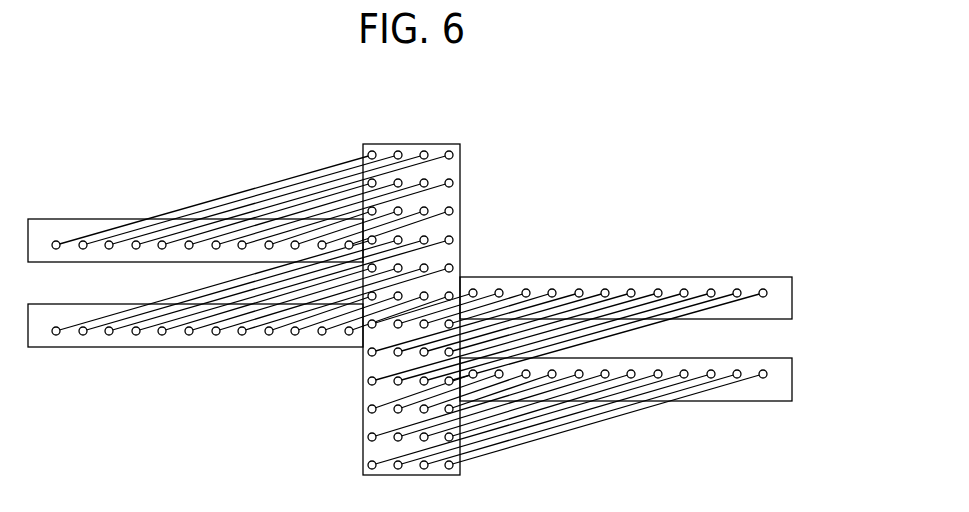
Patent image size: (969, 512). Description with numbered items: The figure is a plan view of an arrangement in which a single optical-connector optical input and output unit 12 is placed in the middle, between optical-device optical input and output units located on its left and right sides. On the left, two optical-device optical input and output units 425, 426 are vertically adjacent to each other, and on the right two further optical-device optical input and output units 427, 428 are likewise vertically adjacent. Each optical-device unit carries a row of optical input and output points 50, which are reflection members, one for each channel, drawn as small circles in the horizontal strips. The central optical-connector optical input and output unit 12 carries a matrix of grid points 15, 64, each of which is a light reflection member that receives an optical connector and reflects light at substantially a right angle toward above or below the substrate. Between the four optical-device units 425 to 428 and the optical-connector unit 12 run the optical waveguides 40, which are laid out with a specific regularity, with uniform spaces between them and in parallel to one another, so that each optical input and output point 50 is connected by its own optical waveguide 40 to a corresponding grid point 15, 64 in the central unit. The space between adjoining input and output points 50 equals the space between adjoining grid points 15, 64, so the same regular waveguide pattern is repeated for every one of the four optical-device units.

The optical-connector optical input and output unit 12 is at (462, 193).
The grid points (light reflection members) 15 is at (362, 409).
The grid points 64 is at (389, 409).
The optical waveguides 40 is at (247, 188).
The optical input and output points (reflection members) 50 is at (217, 335).
The optical-device optical input and output unit 425 is at (67, 219).
The optical-device optical input and output unit 426 is at (96, 347).
The optical-device optical input and output unit 427 is at (723, 277).
The optical-device optical input and output unit 428 is at (735, 401).